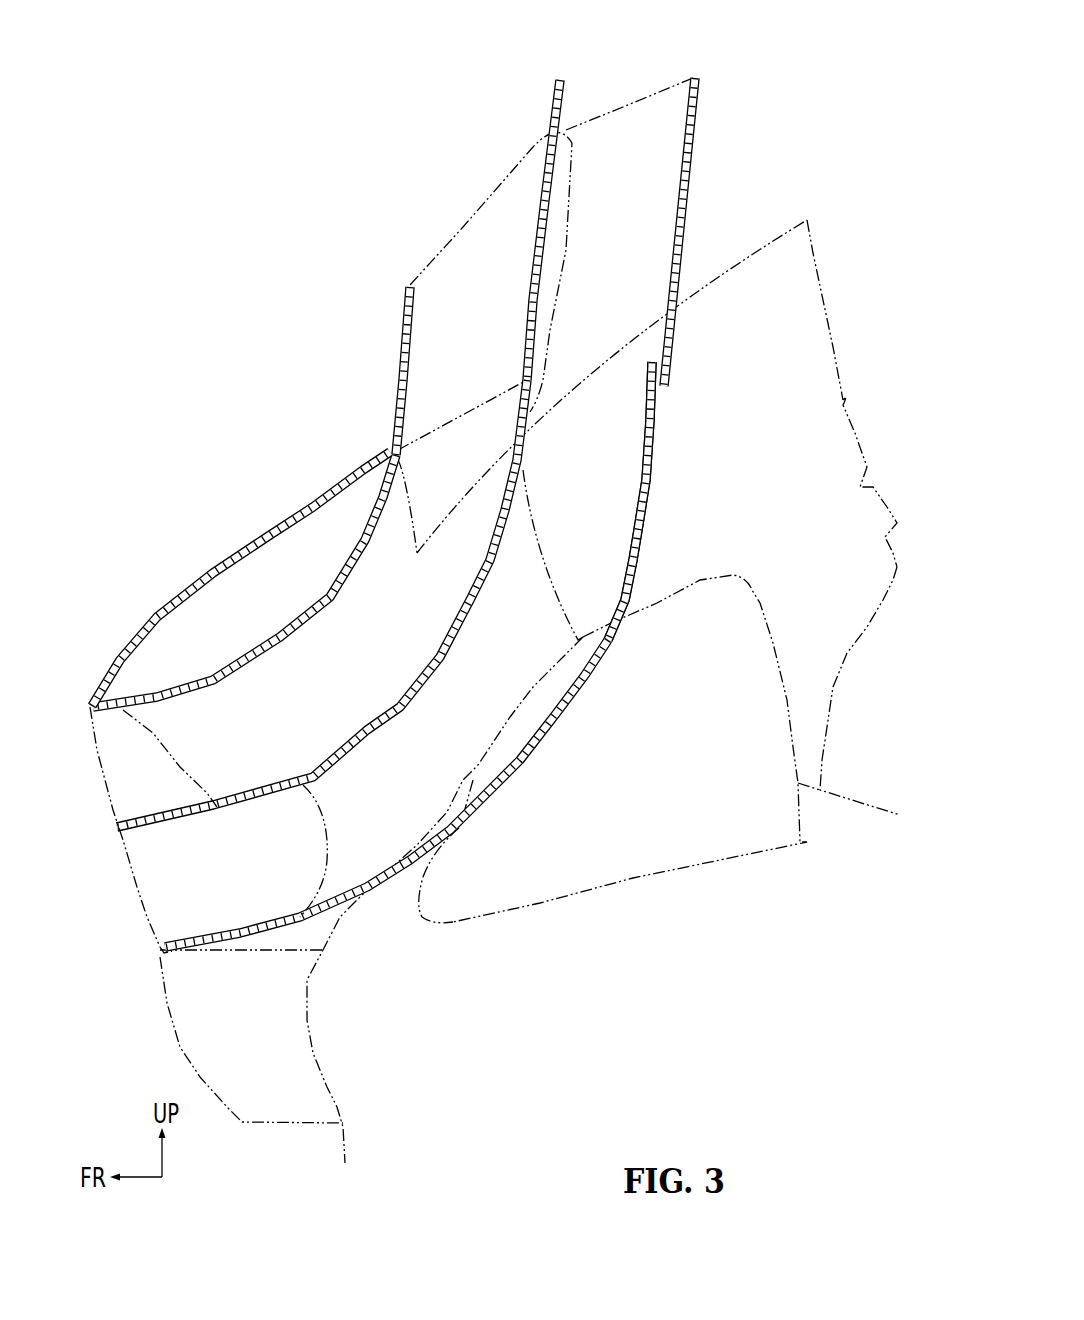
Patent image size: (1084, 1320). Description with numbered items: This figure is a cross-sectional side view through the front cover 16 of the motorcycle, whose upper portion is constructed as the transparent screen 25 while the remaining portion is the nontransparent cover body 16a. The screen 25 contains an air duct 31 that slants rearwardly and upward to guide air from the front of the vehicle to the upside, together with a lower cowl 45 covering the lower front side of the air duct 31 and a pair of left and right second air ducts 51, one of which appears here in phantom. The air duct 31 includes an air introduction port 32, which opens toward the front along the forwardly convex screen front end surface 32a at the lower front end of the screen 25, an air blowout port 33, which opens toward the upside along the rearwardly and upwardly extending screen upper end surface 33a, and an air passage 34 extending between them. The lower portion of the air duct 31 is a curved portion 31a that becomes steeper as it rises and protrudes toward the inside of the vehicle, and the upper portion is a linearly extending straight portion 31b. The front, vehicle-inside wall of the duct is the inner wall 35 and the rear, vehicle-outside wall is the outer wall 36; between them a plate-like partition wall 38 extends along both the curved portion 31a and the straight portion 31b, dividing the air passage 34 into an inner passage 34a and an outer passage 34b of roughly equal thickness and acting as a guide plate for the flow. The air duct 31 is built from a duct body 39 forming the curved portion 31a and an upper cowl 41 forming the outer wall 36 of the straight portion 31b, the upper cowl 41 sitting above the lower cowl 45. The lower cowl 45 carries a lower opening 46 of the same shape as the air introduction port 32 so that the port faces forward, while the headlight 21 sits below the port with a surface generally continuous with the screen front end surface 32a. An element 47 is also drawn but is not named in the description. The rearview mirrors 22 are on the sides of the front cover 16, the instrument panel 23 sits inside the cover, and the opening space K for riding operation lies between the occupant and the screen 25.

The screen 25 is at (235, 202).
The front cover 16 is at (455, 505).
The air blowout port 33 is at (613, 120).
The screen upper end surface 33a is at (650, 93).
The straight portion 31b is at (700, 120).
The air duct 31 is at (501, 525).
The curved portion 31a is at (470, 826).
The opening space K is at (897, 293).
The second air ducts 51 is at (815, 252).
The instrument panel 23 is at (858, 437).
The air passage 34 is at (383, 103).
The inner passage 34a is at (622, 206).
The outer passage 34b is at (505, 308).
The upper cowl 41 is at (405, 315).
The outer wall 36 is at (373, 497).
The lower cowl 45 is at (257, 527).
The inner wall 35 is at (655, 458).
The duct body 39 is at (662, 495).
The partition wall 38 is at (515, 540).
The lower opening 46 is at (153, 733).
The second passage 47 is at (323, 815).
The air introduction port 32 is at (147, 878).
The screen front end surface 32a is at (143, 922).
The headlight 21 is at (193, 1037).
The cover body 16a is at (327, 1087).
The rearview mirrors 22 is at (680, 842).